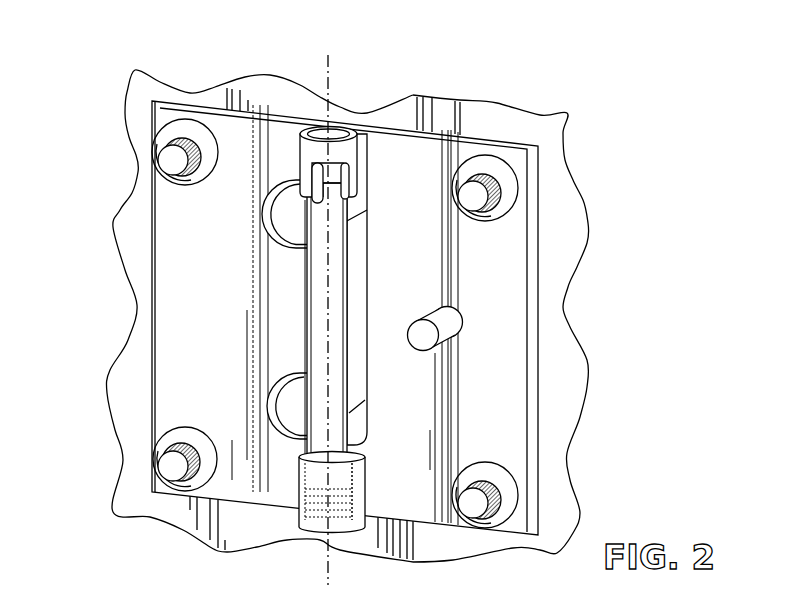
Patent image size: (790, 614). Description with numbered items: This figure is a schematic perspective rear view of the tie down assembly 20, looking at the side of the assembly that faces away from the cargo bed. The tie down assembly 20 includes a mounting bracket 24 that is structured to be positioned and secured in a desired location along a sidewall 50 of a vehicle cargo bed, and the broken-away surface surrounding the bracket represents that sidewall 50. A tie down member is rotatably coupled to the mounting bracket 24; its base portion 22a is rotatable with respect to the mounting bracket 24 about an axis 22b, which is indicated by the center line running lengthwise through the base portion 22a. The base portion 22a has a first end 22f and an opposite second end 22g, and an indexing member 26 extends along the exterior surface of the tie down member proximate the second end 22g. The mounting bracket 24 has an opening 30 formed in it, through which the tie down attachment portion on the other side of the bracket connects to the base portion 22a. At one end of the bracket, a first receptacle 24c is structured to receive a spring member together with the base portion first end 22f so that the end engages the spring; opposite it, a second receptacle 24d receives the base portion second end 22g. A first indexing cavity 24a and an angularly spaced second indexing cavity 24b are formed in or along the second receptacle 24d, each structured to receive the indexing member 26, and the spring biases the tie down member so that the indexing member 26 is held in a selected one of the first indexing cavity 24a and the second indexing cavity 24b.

The tie down assembly 20 is at (349, 301).
The base portion 22a is at (305, 315).
The axis 22b is at (330, 88).
The first end 22f is at (355, 472).
The second end 22g is at (338, 208).
The mounting bracket 24 is at (237, 133).
The first indexing cavity 24a is at (333, 178).
The second indexing cavity 24b is at (352, 197).
The first receptacle 24c is at (300, 488).
The second receptacle 24d is at (354, 131).
The indexing member 26 is at (303, 172).
The opening 30 is at (268, 410).
The sidewall 50 is at (550, 268).